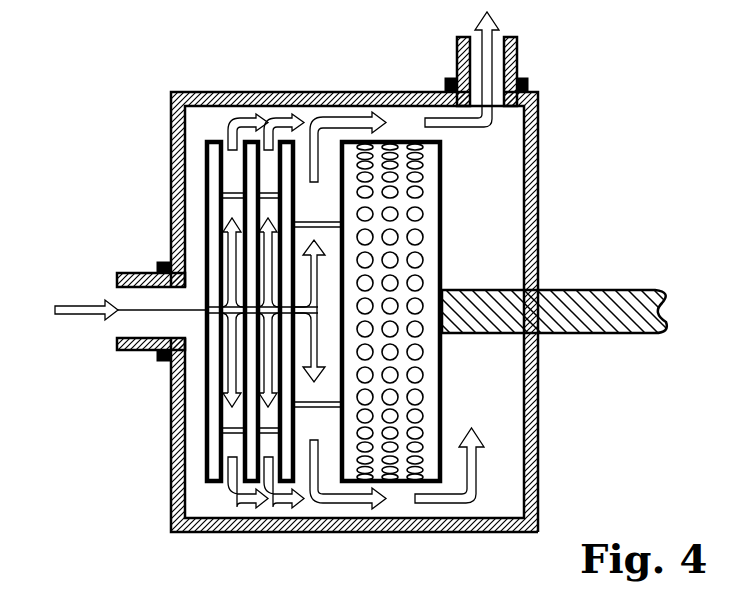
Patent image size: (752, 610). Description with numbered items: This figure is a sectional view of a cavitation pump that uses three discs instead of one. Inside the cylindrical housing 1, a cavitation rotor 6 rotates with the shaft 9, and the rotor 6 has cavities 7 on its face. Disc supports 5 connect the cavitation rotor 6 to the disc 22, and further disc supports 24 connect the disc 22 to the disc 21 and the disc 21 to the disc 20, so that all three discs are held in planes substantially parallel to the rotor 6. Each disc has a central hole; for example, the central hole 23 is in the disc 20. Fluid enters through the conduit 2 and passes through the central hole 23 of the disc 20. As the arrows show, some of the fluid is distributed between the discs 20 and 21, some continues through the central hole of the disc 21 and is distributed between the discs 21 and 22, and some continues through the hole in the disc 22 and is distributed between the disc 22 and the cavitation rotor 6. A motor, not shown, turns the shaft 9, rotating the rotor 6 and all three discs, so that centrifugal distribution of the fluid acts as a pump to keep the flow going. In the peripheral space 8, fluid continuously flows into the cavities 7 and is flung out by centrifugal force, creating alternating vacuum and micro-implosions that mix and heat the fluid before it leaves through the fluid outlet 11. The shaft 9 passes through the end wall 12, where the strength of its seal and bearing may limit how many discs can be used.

The cylindrical housing 1 is at (238, 92).
The conduit 2 is at (156, 265).
The disc supports 5 is at (314, 222).
The cavitation rotor 6 is at (443, 380).
The cavities 7 is at (392, 238).
The peripheral space 8 is at (408, 120).
The shaft 9 is at (590, 288).
The fluid outlet 11 is at (520, 78).
The end wall 12 is at (540, 412).
The disc 20 is at (213, 465).
The disc 21 is at (250, 182).
The disc 22 is at (287, 158).
The central hole 23 is at (212, 345).
The disc supports 24 is at (275, 427).